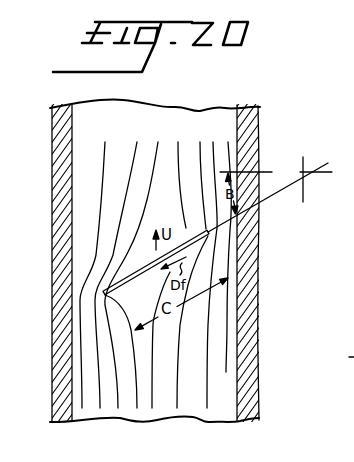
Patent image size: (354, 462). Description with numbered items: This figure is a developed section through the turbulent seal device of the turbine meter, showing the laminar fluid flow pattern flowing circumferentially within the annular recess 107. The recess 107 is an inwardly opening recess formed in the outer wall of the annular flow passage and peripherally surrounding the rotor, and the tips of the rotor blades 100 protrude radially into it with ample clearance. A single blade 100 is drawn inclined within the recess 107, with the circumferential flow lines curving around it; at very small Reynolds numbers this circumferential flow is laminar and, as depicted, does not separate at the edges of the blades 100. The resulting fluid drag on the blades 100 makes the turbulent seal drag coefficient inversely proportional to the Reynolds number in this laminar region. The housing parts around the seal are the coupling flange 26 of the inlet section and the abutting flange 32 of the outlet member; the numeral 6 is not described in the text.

The coupling flange 26 is at (58, 260).
The annular recess 107 is at (172, 130).
The rotor blades 100 is at (135, 280).
The flange 32 is at (270, 194).
The adjacent figure numeral 6 is at (348, 269).